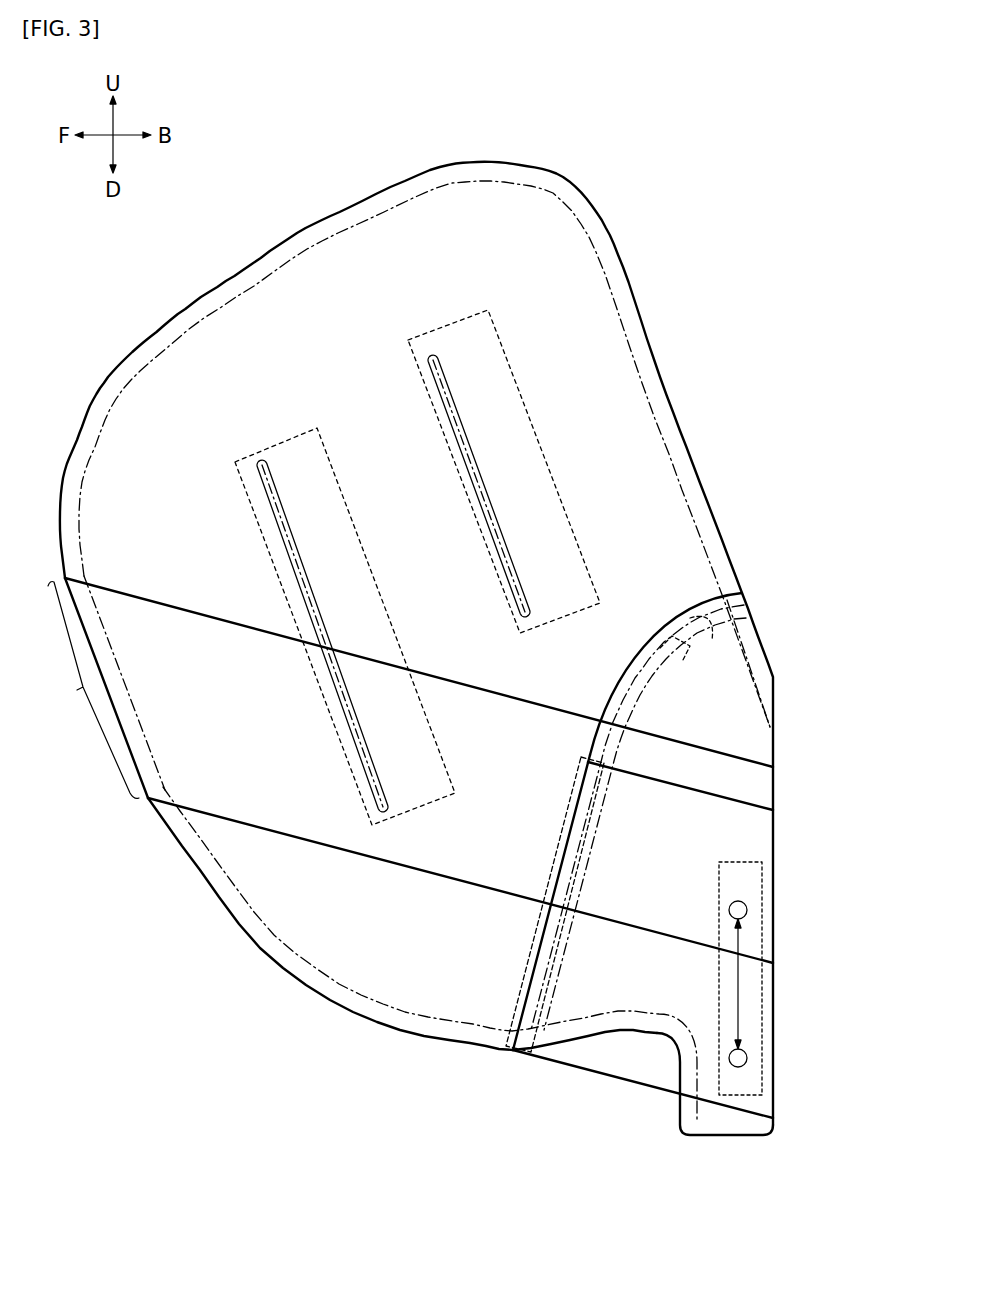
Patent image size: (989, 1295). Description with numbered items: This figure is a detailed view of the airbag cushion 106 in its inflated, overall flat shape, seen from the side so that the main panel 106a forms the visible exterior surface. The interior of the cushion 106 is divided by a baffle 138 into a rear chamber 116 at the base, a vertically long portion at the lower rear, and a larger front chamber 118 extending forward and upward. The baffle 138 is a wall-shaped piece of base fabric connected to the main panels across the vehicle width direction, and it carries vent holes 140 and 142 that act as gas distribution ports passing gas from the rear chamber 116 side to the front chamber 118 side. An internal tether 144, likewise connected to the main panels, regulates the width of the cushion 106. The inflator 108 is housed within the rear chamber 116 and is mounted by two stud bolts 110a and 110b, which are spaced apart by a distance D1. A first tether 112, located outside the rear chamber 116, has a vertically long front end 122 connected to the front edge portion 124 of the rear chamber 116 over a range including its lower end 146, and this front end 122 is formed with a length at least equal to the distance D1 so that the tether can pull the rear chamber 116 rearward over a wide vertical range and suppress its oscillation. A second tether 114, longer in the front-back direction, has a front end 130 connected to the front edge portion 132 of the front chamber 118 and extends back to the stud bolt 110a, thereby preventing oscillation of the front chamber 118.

The cushion 106 is at (512, 160).
The main panel 106a is at (135, 433).
The front chamber 118 is at (320, 282).
The second tether 114 is at (185, 610).
The front edge portion 124 is at (590, 760).
The front end 130 is at (92, 688).
The front edge portion 132 is at (158, 815).
The rear chamber 116 is at (737, 694).
The front end 122 is at (546, 913).
The baffle 138 is at (641, 695).
The vent hole 140 is at (727, 627).
The vent hole 142 is at (548, 977).
The internal tether 144 is at (522, 398).
The lower end 146 is at (508, 1055).
The inflator 108 is at (763, 862).
The stud bolt 110a is at (748, 908).
The stud bolt 110b is at (748, 1057).
The distance D1 is at (742, 988).
The first tether 112 is at (627, 1082).